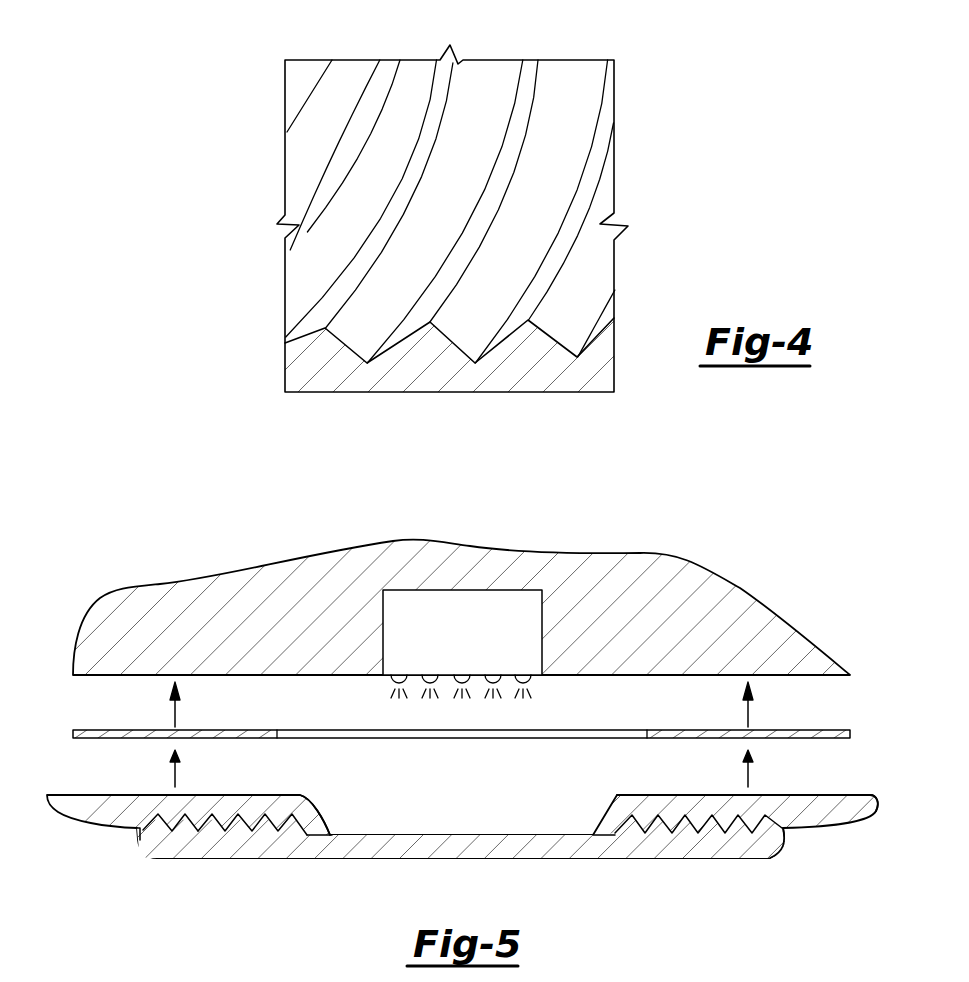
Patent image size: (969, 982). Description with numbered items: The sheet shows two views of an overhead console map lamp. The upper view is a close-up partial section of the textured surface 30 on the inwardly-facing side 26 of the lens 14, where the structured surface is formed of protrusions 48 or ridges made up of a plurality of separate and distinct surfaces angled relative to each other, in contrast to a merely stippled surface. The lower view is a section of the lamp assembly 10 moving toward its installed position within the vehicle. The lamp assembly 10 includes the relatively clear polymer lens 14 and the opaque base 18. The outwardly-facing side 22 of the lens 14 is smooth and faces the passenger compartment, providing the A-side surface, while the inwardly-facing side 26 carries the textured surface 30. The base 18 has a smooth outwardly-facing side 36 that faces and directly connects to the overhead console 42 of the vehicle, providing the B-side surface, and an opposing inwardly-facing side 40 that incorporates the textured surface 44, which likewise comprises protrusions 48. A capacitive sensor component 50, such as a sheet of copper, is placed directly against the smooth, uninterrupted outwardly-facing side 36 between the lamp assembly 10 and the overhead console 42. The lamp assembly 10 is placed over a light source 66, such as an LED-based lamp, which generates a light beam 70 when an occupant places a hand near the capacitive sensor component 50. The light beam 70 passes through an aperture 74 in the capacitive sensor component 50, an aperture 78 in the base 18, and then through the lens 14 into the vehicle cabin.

In FIG. 5, the lamp assembly 10 is at (848, 770).
In FIG. 4, the lens 14 is at (585, 97).
In FIG. 5, the lens 14 is at (784, 838).
In FIG. 5, the base 18 is at (878, 811).
In FIG. 5, the outwardly-facing side 22 is at (387, 876).
In FIG. 4, the inwardly-facing side 26 is at (414, 188).
In FIG. 4, the textured surface 30 is at (557, 255).
In FIG. 5, the textured surface 30 is at (166, 824).
In FIG. 5, the outwardly-facing side 36 is at (296, 779).
In FIG. 5, the inwardly-facing side 40 is at (124, 848).
In FIG. 5, the overhead console 42 is at (258, 593).
In FIG. 5, the textured surface 44 is at (228, 828).
In FIG. 4, the protrusions 48 is at (467, 323).
In FIG. 5, the capacitive sensor component 50 is at (105, 730).
In FIG. 5, the light source 66 is at (474, 647).
In FIG. 5, the light beam 70 is at (554, 692).
In FIG. 5, the aperture 74 is at (643, 738).
In FIG. 5, the aperture 78 is at (597, 823).